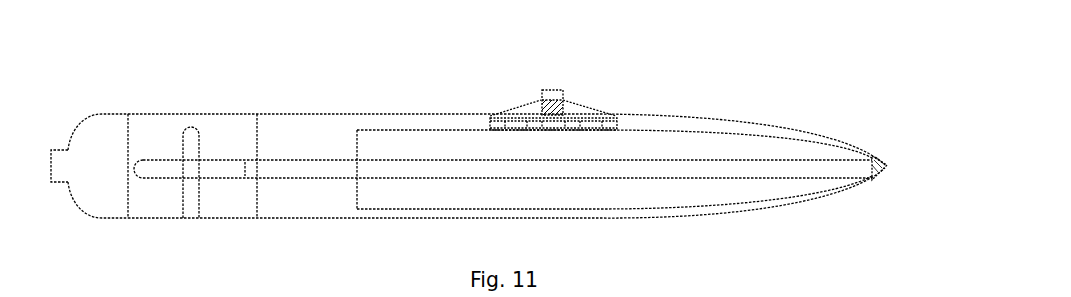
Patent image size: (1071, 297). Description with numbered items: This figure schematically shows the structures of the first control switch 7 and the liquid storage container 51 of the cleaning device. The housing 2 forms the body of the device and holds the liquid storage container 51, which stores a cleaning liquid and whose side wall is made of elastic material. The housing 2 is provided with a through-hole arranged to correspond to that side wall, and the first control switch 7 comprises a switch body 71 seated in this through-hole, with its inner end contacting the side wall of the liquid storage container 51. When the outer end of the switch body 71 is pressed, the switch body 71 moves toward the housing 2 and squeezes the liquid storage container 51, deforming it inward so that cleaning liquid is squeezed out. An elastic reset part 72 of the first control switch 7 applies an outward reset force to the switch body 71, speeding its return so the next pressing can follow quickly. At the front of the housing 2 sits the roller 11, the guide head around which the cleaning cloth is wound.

The housing 2 is at (350, 114).
The first control switch 7 is at (548, 36).
The switch body 71 is at (548, 95).
The elastic reset part 72 is at (541, 97).
The liquid storage container 51 is at (745, 130).
The roller 11 is at (887, 165).